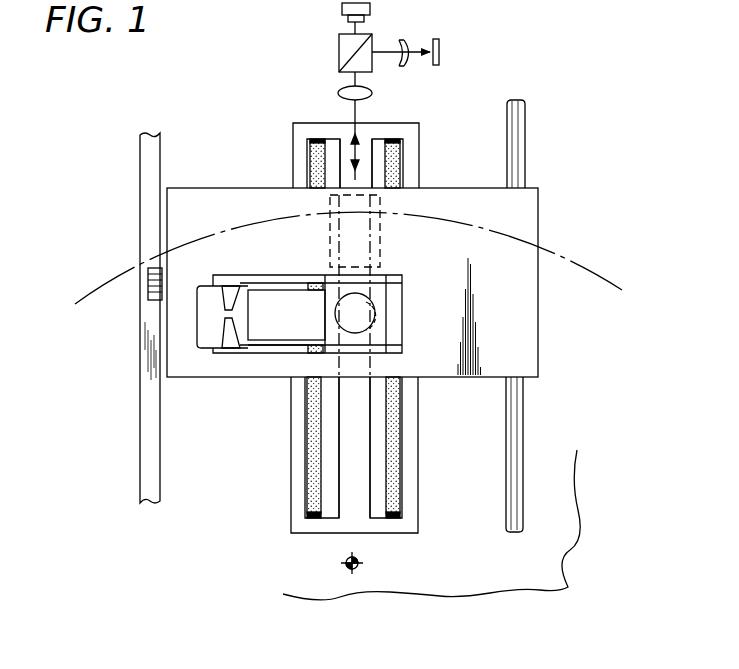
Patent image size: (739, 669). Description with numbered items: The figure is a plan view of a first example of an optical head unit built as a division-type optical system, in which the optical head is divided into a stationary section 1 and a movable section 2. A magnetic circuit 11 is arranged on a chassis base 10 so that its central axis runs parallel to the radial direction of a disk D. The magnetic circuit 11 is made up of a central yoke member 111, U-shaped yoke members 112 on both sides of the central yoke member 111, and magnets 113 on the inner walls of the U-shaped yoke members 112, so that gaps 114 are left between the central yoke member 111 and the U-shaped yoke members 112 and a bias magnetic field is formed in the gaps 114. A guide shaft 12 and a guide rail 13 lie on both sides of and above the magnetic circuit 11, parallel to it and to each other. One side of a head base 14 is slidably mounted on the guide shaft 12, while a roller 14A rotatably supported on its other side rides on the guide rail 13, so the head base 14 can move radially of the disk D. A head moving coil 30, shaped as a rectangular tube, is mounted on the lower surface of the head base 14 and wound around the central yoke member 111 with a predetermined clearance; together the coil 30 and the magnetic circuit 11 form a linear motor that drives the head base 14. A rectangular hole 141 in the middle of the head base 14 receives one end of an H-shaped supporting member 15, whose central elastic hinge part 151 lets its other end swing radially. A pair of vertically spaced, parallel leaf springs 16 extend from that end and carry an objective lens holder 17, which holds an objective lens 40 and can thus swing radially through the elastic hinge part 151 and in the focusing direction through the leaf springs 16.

The stationary section 1 is at (453, 5).
The movable section 2 is at (550, 176).
The chassis base 10 is at (578, 477).
The magnetic circuit 11 is at (354, 328).
The guide shaft 12 is at (515, 405).
The guide rail 13 is at (150, 420).
The head base 14 is at (463, 188).
The roller 14A is at (150, 283).
The supporting member 15 is at (217, 339).
The leaf springs 16 is at (280, 300).
The objective lens holder 17 is at (328, 312).
The head moving coil 30 is at (382, 240).
The objective lens 40 is at (362, 318).
The central yoke member 111 is at (358, 522).
The U-shaped yoke members 112 is at (298, 464).
The magnets 113 is at (308, 428).
The gaps 114 is at (327, 483).
The rectangular hole 141 is at (273, 350).
The elastic hinge part 151 is at (226, 292).
The disk D is at (597, 272).